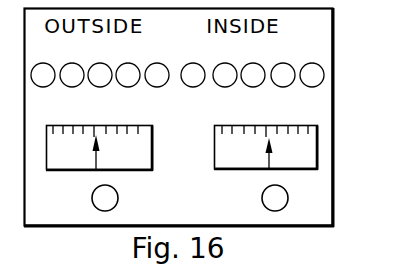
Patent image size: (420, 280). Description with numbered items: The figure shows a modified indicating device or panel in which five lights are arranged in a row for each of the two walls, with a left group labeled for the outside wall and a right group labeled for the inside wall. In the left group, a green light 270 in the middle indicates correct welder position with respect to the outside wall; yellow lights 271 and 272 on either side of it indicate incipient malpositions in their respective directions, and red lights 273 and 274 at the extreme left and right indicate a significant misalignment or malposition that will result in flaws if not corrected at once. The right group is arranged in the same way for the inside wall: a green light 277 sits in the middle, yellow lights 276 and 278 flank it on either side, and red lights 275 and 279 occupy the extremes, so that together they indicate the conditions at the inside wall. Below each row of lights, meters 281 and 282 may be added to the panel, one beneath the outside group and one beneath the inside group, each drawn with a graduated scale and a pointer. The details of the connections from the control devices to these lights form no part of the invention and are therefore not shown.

The green light 270 is at (100, 87).
The yellow light 271 is at (70, 87).
The yellow light 272 is at (130, 87).
The red light 273 is at (45, 63).
The red light 274 is at (157, 63).
The red light 275 is at (192, 87).
The yellow light 276 is at (225, 63).
The green light 277 is at (250, 87).
The yellow light 278 is at (283, 63).
The red light 279 is at (308, 87).
The meter 281 is at (132, 170).
The meter 282 is at (225, 170).